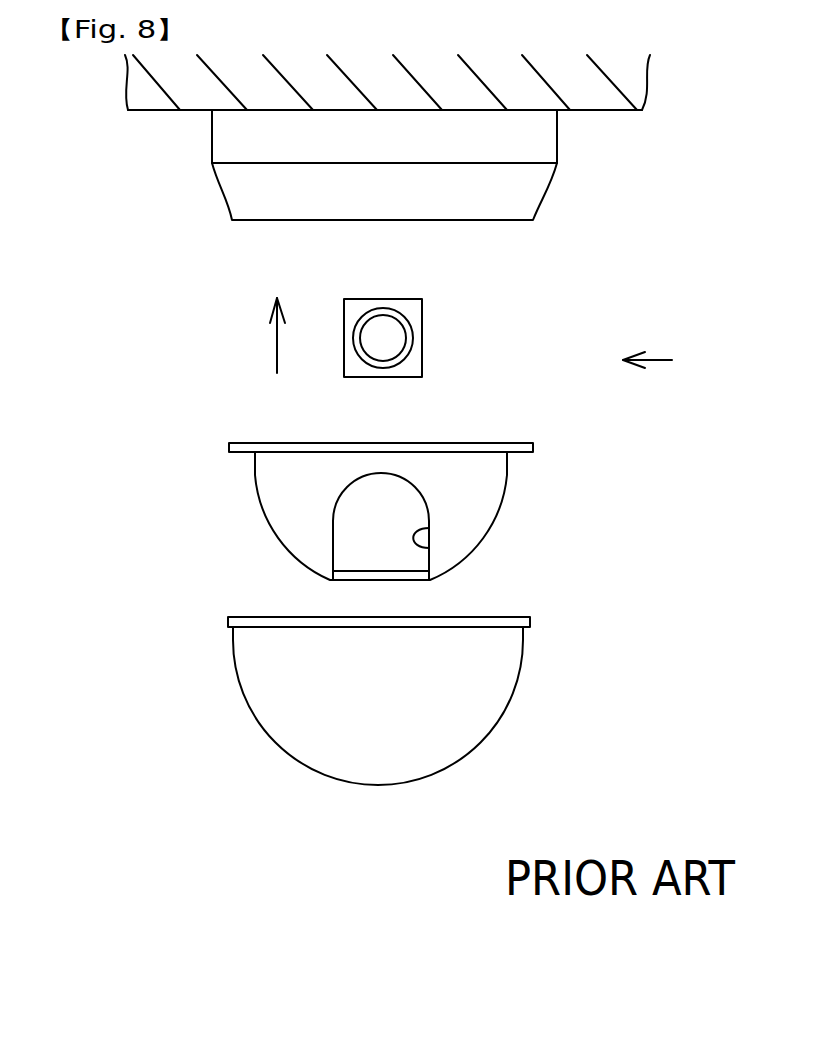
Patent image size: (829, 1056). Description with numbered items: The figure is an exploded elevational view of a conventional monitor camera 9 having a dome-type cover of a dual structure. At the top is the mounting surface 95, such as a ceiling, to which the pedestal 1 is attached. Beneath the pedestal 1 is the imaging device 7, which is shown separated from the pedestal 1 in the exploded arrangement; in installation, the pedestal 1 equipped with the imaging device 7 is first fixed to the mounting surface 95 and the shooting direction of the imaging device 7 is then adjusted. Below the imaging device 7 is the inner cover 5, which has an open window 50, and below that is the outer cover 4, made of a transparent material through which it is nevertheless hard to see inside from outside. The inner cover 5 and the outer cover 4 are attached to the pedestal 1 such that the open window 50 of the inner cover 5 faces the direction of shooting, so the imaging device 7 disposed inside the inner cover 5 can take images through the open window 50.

The mounting surface 95 is at (607, 112).
The pedestal 1 is at (525, 193).
The imaging device 7 is at (393, 342).
The monitor camera 9 is at (697, 382).
The inner cover 5 is at (487, 490).
The open window 50 is at (430, 548).
The outer cover 4 is at (498, 697).